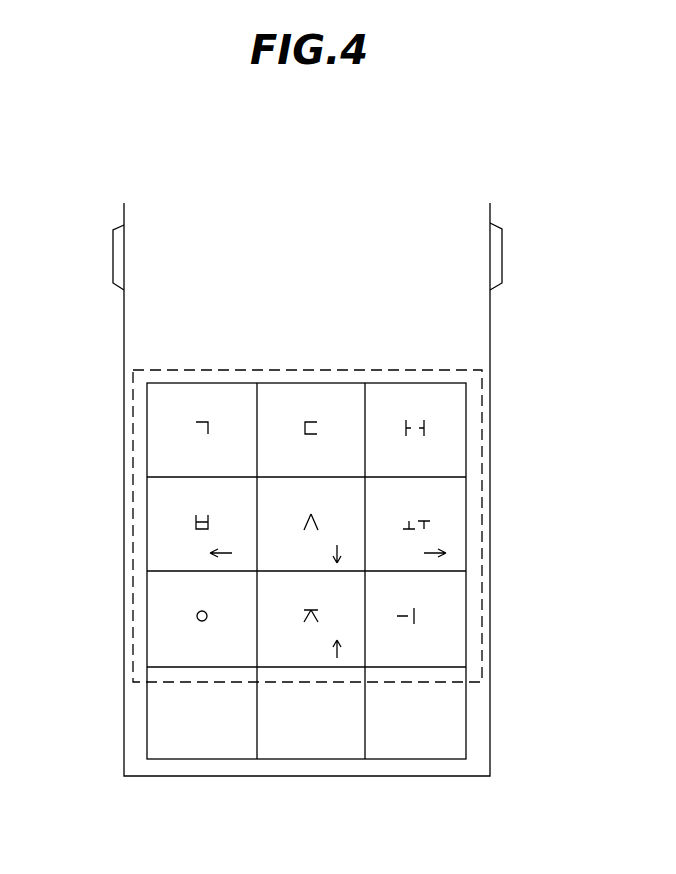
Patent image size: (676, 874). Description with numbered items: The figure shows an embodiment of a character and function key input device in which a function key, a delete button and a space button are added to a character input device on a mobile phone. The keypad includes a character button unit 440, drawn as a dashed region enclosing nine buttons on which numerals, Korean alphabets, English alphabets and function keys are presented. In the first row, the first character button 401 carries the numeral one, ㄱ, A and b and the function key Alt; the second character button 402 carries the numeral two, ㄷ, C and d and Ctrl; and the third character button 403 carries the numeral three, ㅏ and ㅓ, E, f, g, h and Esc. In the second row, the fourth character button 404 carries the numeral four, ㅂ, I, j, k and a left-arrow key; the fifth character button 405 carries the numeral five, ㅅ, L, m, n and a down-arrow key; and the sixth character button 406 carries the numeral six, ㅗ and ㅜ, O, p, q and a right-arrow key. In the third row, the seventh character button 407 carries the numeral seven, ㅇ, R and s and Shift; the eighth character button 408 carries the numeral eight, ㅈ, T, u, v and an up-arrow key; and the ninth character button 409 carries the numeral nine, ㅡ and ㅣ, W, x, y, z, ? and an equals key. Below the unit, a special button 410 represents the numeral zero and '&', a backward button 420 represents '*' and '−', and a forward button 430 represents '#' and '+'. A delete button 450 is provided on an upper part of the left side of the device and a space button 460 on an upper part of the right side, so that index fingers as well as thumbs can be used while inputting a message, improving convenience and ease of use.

The first character button 401 is at (192, 383).
The second character button 402 is at (305, 383).
The third character button 403 is at (405, 383).
The fourth character button 404 is at (148, 509).
The fifth character button 405 is at (365, 513).
The sixth character button 406 is at (466, 545).
The seventh character button 407 is at (148, 601).
The eighth character button 408 is at (365, 602).
The ninth character button 409 is at (466, 633).
The special button 410 is at (313, 760).
The backward button 420 is at (200, 760).
The forward button 430 is at (420, 760).
The character button unit 440 is at (482, 400).
The delete button 450 is at (113, 258).
The space button 460 is at (502, 255).